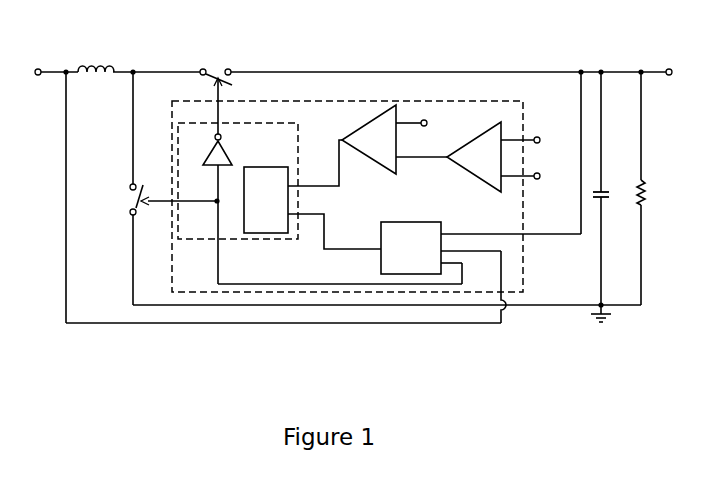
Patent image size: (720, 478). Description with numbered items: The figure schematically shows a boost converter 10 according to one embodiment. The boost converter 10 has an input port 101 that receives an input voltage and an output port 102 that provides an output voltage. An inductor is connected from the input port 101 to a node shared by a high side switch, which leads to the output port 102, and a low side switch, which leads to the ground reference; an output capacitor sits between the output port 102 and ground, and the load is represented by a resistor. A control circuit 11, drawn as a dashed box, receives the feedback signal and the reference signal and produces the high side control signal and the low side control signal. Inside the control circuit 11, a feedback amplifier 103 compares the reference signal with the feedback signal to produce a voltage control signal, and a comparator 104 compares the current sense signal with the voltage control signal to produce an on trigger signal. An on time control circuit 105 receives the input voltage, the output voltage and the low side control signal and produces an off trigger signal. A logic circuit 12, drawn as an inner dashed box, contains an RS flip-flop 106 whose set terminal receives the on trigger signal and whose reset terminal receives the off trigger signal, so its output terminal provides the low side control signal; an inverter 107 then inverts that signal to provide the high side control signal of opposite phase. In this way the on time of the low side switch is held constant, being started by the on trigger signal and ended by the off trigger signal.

The boost converter 10 is at (389, 33).
The input port 101 is at (40, 74).
The output port 102 is at (658, 72).
The feedback amplifier 103 is at (488, 134).
The comparator 104 is at (371, 127).
The on time control circuit 105 is at (411, 248).
The RS flip-flop 106 is at (269, 167).
The inverter 107 is at (207, 153).
The control circuit 11 is at (523, 283).
The logic circuit 12 is at (263, 239).